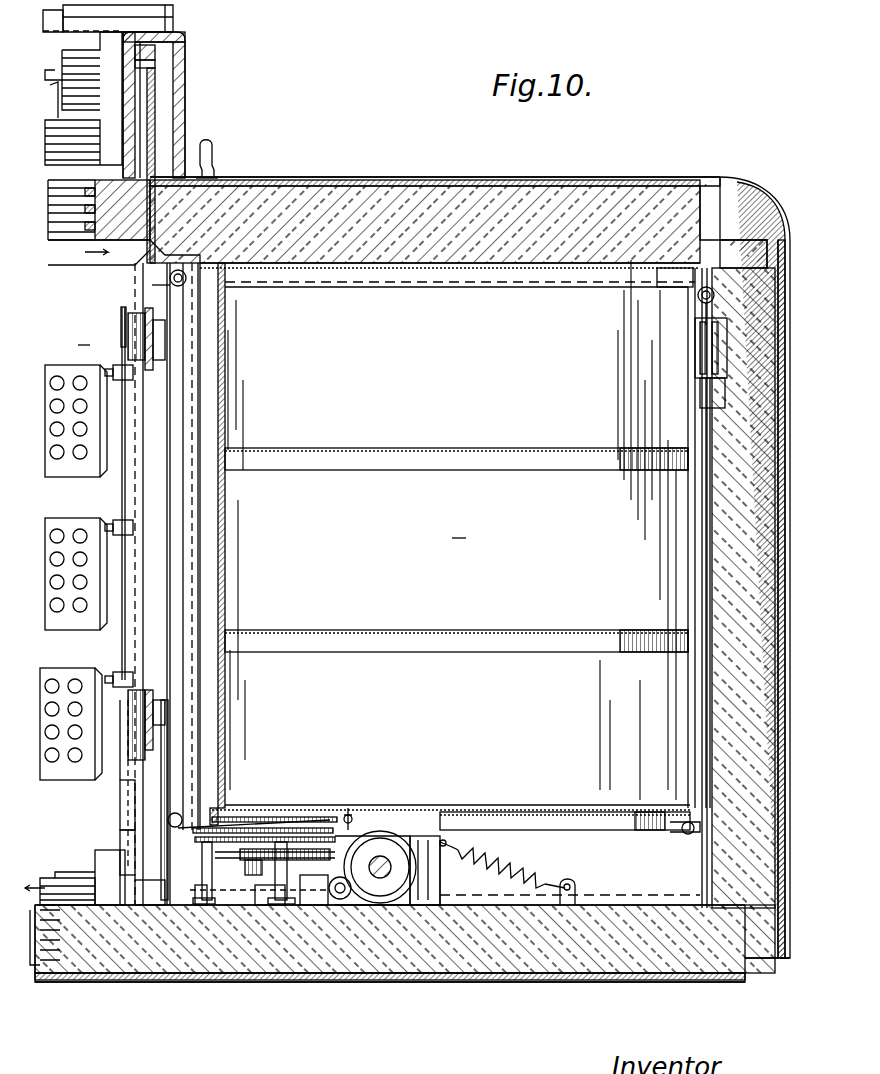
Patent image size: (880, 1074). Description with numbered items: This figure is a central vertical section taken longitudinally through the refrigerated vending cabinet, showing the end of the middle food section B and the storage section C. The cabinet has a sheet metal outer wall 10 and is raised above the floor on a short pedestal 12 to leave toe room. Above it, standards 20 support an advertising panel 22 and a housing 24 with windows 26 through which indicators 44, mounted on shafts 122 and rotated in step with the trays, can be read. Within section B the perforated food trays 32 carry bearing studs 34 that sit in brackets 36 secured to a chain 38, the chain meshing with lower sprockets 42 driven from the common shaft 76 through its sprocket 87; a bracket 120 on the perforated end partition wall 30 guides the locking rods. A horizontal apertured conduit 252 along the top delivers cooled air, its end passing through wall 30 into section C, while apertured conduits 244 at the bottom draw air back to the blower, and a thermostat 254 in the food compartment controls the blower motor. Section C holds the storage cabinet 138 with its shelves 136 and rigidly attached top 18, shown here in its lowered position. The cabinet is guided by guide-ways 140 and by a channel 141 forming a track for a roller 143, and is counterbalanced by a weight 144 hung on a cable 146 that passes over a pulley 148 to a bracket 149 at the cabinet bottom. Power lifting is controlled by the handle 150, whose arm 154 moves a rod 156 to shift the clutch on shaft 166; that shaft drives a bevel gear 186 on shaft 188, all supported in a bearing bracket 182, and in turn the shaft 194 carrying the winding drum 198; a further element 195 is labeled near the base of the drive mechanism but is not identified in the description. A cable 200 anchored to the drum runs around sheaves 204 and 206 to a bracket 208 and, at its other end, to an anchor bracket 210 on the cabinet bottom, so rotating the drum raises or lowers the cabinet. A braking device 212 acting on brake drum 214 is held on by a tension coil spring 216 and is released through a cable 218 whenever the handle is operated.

The outer wall 10 is at (789, 770).
The pedestal 12 is at (40, 970).
The top 18 is at (462, 177).
The standards 20 is at (185, 100).
The panel 22 is at (160, 20).
The housing 24 is at (115, 27).
The windows 26 is at (83, 96).
The end partition wall 30 is at (145, 282).
The trays 32 is at (72, 658).
The bearing studs 34 is at (120, 522).
The brackets 36 is at (125, 354).
The chain 38 is at (118, 320).
The sprockets 42 is at (132, 732).
The indicators 44 is at (48, 100).
The shaft 76 is at (105, 875).
The sprocket 87 is at (170, 900).
The bracket 120 is at (112, 852).
The shafts 122 is at (155, 63).
The shelves 136 is at (440, 448).
The cabinet 138 is at (225, 400).
The guide-ways 140 is at (440, 838).
The channel 141 is at (185, 780).
The roller 143 is at (180, 815).
The weight 144 is at (690, 350).
The cable 146 is at (692, 415).
The pulley 148 is at (696, 300).
The bracket 149 is at (695, 832).
The handle 150 is at (212, 148).
The arm 154 is at (217, 900).
The rod 156 is at (250, 900).
The shaft 166 is at (70, 905).
The bearing bracket 182 is at (310, 905).
The bevel gear 186 is at (405, 900).
The shaft 188 is at (392, 900).
The shaft 194 is at (420, 858).
The anchor bracket 195 is at (460, 905).
The winding drum 198 is at (385, 830).
The cable 200 is at (285, 838).
The sheave 204 is at (185, 790).
The sheave 206 is at (185, 282).
The bracket 208 is at (215, 825).
The anchor bracket 210 is at (368, 797).
The braking device 212 is at (410, 838).
The brake drum 214 is at (570, 887).
The tension coil spring 216 is at (525, 860).
The cable 218 is at (270, 836).
The apertured conduits 244 is at (70, 882).
The apertured conduit 252 is at (80, 268).
The thermostat 254 is at (122, 813).
The section B is at (85, 335).
The section C is at (458, 527).